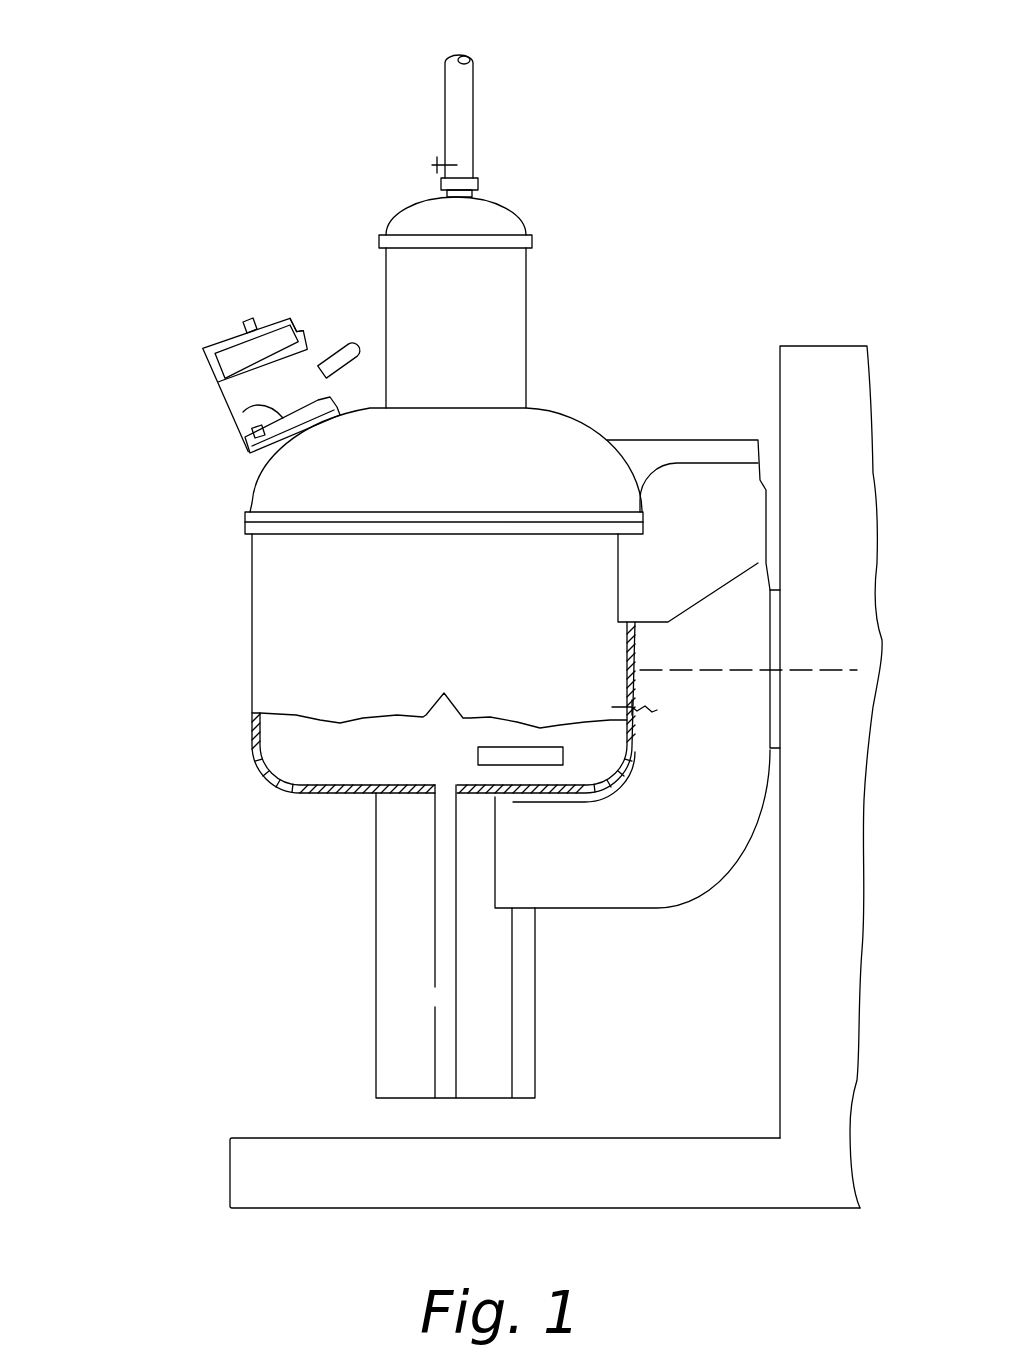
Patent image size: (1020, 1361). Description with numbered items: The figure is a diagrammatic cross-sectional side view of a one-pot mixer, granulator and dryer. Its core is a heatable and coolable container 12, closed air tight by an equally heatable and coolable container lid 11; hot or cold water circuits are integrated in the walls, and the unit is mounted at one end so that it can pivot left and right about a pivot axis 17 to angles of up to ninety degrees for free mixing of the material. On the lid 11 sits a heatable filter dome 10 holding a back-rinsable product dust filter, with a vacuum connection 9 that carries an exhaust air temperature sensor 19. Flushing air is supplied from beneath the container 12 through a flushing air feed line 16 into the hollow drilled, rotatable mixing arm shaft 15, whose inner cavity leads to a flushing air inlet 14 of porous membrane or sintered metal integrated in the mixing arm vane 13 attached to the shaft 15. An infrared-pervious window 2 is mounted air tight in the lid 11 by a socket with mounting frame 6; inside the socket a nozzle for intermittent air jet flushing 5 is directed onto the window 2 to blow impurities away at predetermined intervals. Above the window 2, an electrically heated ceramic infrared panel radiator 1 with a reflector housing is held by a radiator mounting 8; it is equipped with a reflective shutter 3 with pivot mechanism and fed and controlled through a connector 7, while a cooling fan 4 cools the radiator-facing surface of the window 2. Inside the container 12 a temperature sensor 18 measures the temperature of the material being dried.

The infrared radiator with reflector housing 1 is at (211, 370).
The infrared-pervious window 2 is at (232, 411).
The reflective shutter with pivot mechanism 3 is at (298, 333).
The cooling fan 4 is at (372, 408).
The nozzle for intermittent air jet flushing 5 is at (263, 455).
The socket with mounting frame 6 is at (247, 437).
The connector for current supply and control 7 is at (248, 320).
The radiator mounting 8 is at (217, 388).
The vacuum connection 9 is at (448, 107).
The filter dome 10 is at (385, 277).
The container lid 11 is at (260, 470).
The container 12 is at (253, 553).
The mixing arm paddle with inner cavity 13 is at (318, 757).
The flushing air inlet 14 is at (487, 770).
The hollow drilled mixer arm shaft 15 is at (435, 943).
The flushing air feed line 16 is at (433, 993).
The pivot axis 17 is at (628, 668).
The material temperature sensor 18 is at (630, 760).
The exhaust air temperature sensor 19 is at (432, 165).